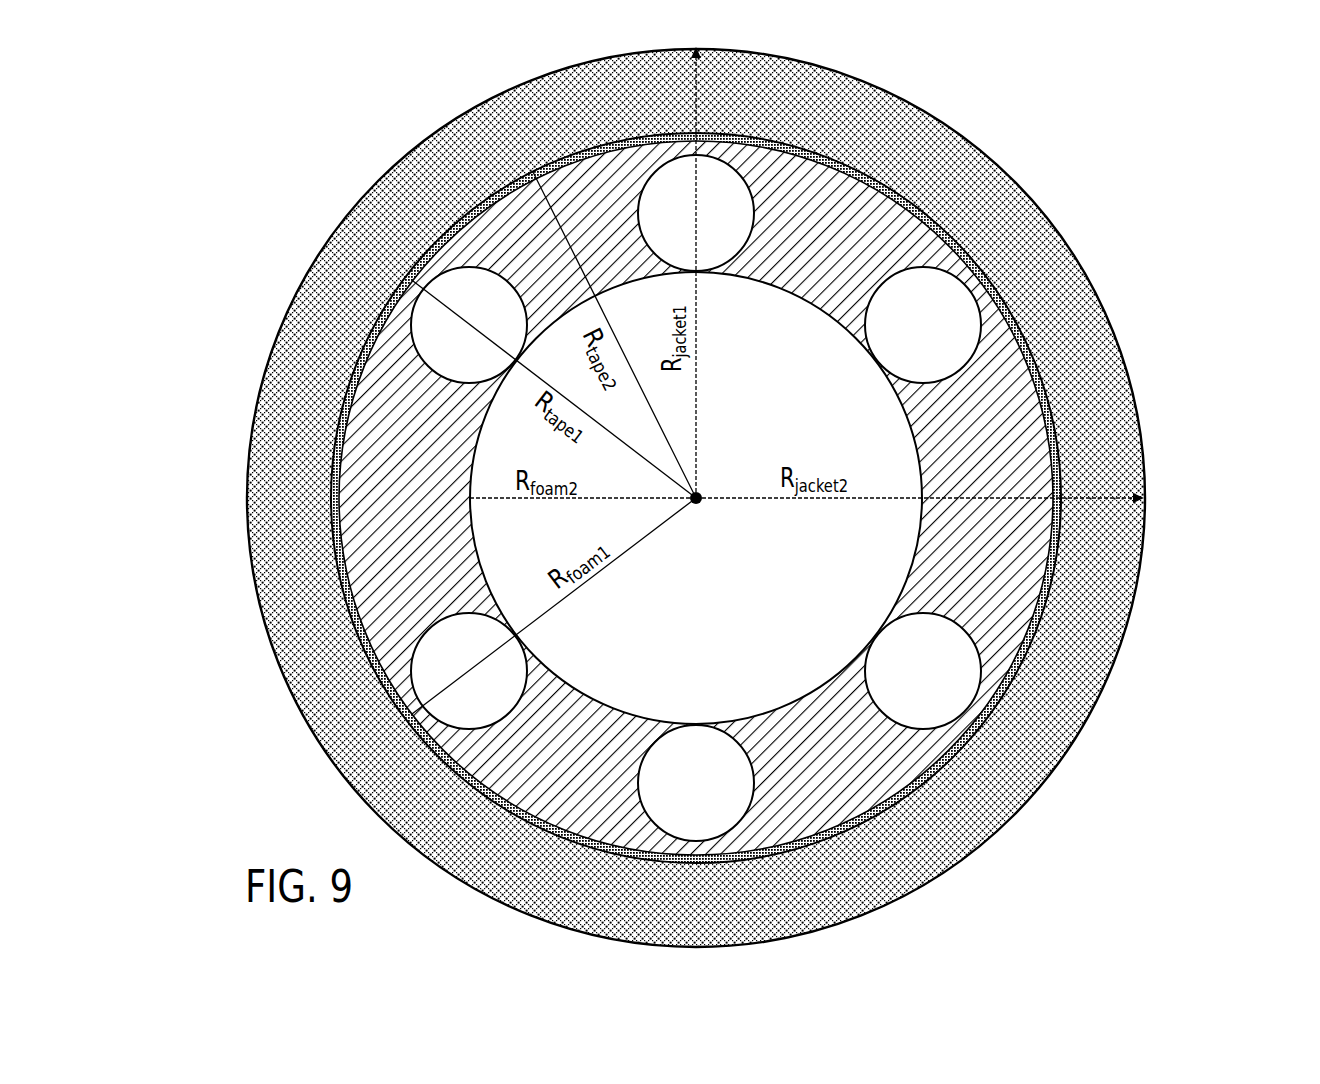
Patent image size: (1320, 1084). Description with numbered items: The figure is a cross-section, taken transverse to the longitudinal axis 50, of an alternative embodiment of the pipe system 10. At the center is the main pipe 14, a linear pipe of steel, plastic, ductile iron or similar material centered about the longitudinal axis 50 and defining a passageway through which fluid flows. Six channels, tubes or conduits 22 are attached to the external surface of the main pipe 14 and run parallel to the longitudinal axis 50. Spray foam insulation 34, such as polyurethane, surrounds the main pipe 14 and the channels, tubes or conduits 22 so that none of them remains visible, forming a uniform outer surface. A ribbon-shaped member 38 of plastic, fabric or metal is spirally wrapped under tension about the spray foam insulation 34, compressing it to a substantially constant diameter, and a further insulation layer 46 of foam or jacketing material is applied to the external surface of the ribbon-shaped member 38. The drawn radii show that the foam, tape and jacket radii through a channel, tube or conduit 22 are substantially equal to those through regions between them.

The pipe system 10 is at (335, 158).
The main pipe 14 is at (913, 545).
The channels, tubes or conduits 22 is at (667, 203).
The spray foam insulation 34 is at (378, 565).
The ribbon-shaped member 38 is at (1060, 432).
The further insulation layer 46 is at (903, 170).
The longitudinal axis 50 is at (700, 503).